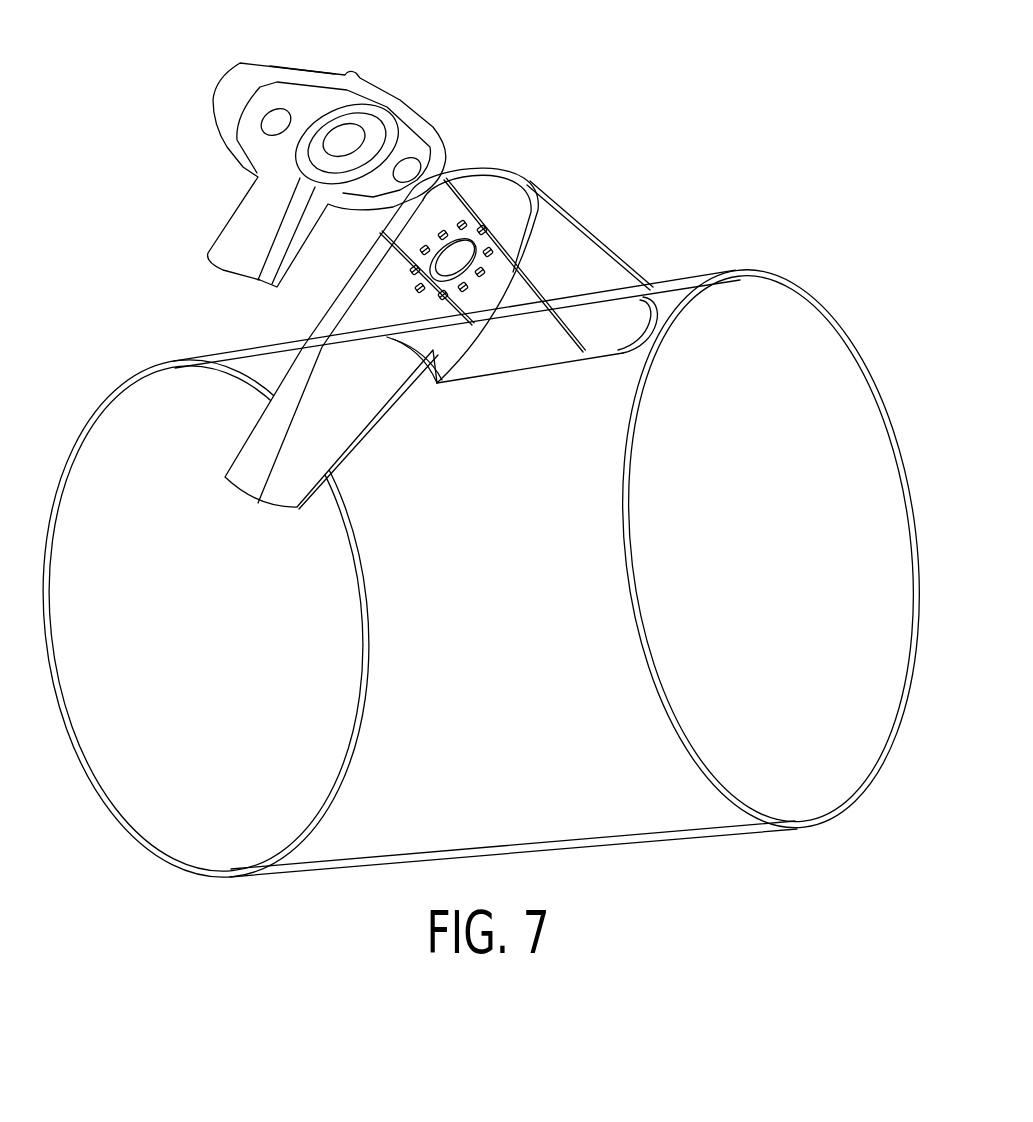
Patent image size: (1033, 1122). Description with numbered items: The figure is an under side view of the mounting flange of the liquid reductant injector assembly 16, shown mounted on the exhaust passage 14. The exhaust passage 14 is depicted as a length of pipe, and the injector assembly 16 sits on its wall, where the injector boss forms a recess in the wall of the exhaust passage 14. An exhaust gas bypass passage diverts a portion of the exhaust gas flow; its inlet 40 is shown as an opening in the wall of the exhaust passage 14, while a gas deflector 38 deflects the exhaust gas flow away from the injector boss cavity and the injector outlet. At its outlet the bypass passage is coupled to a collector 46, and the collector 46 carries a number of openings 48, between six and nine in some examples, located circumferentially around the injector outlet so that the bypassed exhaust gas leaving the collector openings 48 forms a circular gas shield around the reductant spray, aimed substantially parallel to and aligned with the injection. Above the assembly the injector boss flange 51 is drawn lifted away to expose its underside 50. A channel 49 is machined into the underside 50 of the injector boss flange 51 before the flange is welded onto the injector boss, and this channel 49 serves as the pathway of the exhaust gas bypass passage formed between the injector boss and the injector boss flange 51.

The exhaust passage 14 is at (194, 645).
The liquid reductant injector assembly 16 is at (893, 191).
The gas deflector 38 is at (306, 519).
The inlet 40 is at (411, 368).
The collector 46 is at (503, 232).
The openings 48 is at (421, 250).
The channel 49 is at (252, 271).
The underside 50 is at (401, 130).
The injector boss flange 51 is at (301, 64).